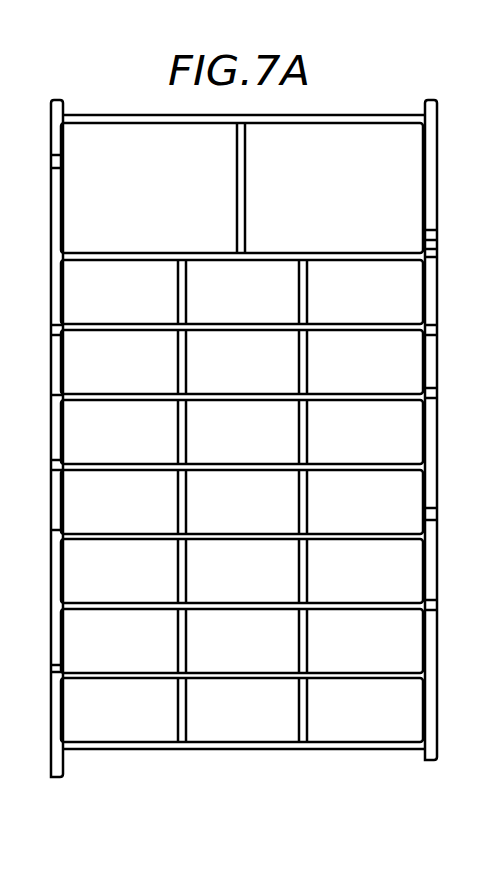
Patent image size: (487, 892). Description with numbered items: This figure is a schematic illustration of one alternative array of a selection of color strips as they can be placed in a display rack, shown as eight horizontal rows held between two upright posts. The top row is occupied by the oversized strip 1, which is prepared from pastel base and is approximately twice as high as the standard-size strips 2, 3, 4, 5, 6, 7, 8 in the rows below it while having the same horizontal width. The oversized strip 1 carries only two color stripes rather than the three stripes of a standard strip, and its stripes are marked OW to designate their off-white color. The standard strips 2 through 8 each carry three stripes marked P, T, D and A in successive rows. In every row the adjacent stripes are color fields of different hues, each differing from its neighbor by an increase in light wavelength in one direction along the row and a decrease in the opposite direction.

The oversized off-white color strip row 1 is at (242, 188).
The standard size color strip row 2 is at (242, 292).
The standard size color strip row 3 is at (242, 362).
The standard size color strip row 4 is at (242, 432).
The standard size color strip row 5 is at (242, 502).
The standard size color strip row 6 is at (242, 571).
The standard size color strip row 7 is at (242, 641).
The standard size color strip row 8 is at (242, 710).